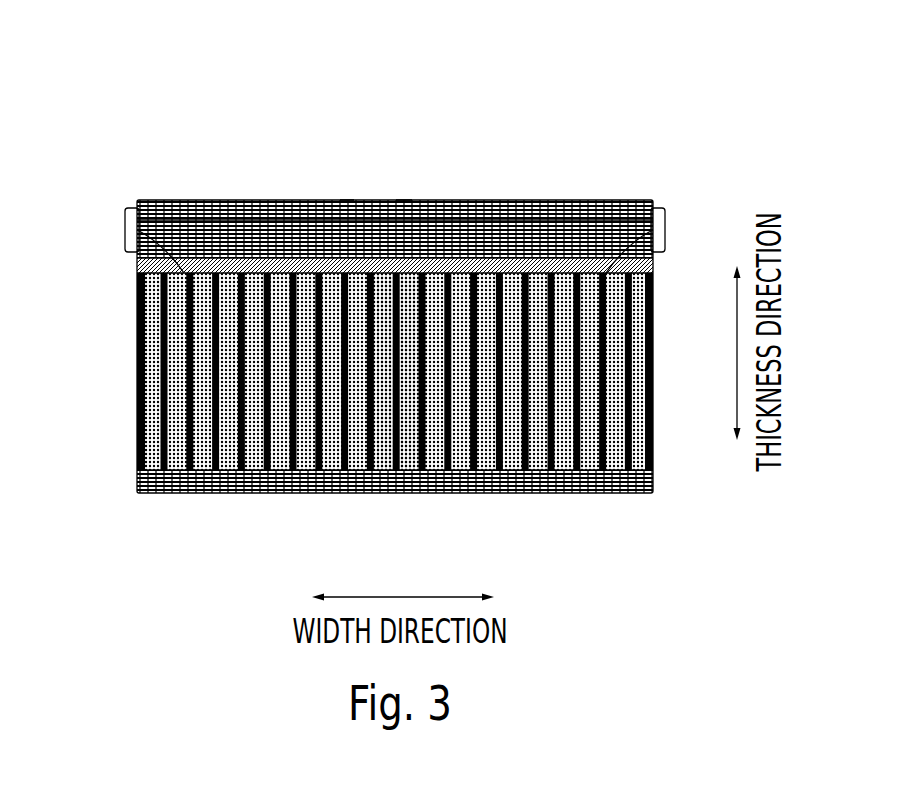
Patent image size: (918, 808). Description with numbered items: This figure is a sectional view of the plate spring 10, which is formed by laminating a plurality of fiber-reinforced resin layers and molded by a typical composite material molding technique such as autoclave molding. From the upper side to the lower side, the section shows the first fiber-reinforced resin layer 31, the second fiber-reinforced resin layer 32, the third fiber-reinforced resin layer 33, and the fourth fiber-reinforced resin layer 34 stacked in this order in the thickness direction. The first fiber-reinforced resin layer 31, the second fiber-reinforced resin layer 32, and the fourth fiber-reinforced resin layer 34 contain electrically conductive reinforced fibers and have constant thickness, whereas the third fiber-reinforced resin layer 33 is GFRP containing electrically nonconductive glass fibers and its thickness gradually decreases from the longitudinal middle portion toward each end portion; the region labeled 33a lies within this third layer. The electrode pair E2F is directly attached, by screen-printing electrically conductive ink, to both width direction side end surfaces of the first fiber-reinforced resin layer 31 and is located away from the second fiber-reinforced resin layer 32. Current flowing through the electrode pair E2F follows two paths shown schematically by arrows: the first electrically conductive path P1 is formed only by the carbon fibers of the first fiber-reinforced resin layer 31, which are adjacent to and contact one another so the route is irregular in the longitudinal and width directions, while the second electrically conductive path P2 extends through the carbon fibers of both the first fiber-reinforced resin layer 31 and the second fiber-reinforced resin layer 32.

The plate spring 10 is at (365, 318).
The first fiber-reinforced resin layer 31 is at (286, 203).
The second fiber-reinforced resin layer 32 is at (137, 264).
The third fiber-reinforced resin layer 33 is at (347, 418).
The negative electrode active material particles 33a is at (407, 476).
The fourth fiber-reinforced resin layer 34 is at (137, 477).
The first electrically conductive path P1 is at (347, 203).
The second electrically conductive path P2 is at (404, 203).
The electrode pair E2F is at (392, 162).